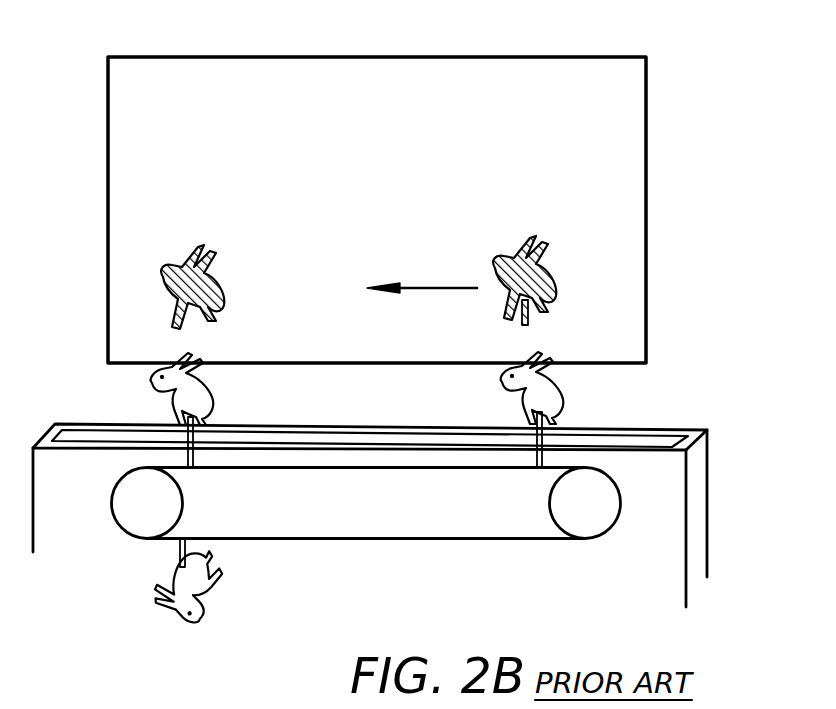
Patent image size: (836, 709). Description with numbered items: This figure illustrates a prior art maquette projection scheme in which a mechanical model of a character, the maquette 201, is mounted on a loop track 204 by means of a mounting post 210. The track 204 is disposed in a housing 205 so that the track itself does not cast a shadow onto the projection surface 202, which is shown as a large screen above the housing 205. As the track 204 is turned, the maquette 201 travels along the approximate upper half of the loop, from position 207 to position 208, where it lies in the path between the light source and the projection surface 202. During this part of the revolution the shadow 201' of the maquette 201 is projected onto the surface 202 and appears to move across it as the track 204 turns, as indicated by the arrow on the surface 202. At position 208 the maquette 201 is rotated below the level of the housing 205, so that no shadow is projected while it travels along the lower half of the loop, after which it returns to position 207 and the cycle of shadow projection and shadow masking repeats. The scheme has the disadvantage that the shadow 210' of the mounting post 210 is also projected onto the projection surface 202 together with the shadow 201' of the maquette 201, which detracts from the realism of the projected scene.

The projection surface 202 is at (625, 101).
The shadow of the maquette 201' is at (555, 257).
The shadow of the mounting post 210' is at (577, 318).
The housing 205 is at (690, 500).
The loop track 204 is at (523, 541).
The mounting post 210 is at (483, 460).
The position 207 is at (560, 390).
The position 208 is at (212, 390).
The maquette 201 is at (222, 587).